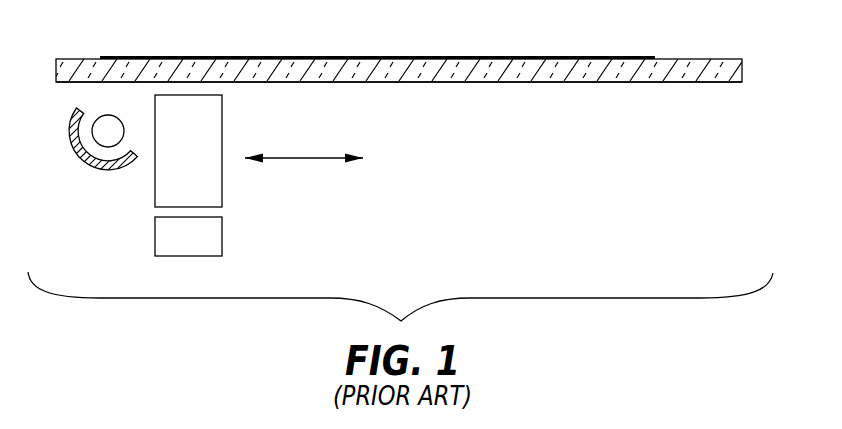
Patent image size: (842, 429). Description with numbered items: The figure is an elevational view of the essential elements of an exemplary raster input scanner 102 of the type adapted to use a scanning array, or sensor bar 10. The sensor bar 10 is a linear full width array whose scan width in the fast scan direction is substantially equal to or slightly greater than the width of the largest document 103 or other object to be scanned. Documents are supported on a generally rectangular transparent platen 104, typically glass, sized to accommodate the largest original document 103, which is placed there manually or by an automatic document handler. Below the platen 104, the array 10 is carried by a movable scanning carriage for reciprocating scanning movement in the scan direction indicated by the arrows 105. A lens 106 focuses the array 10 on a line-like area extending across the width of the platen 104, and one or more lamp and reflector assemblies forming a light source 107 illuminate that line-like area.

The raster input scanner 102 is at (167, 43).
The document 103 is at (412, 58).
The transparent platen 104 is at (460, 72).
The scan direction arrows 105 is at (315, 158).
The lens 106 is at (222, 148).
The light source 107 is at (100, 170).
The sensor bar 10 is at (222, 238).